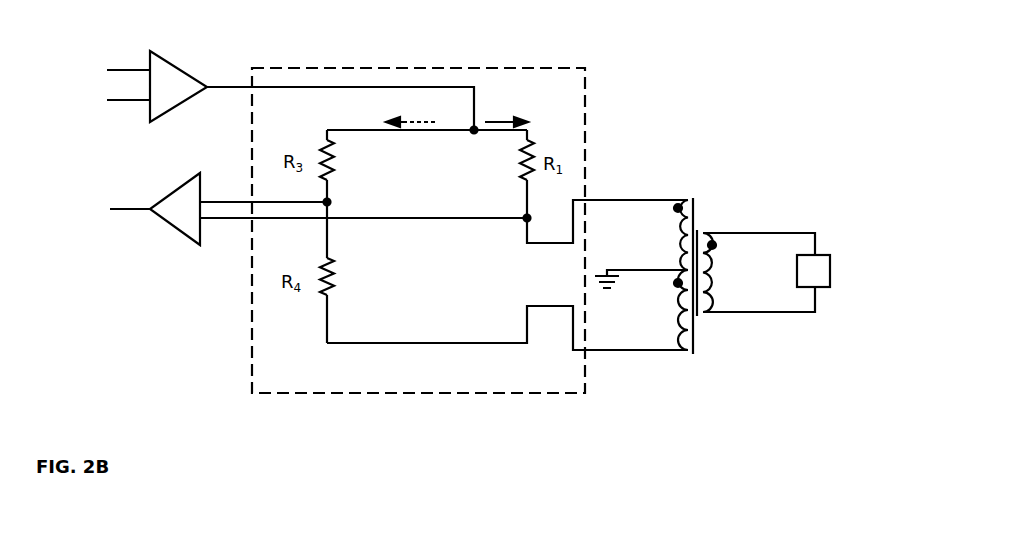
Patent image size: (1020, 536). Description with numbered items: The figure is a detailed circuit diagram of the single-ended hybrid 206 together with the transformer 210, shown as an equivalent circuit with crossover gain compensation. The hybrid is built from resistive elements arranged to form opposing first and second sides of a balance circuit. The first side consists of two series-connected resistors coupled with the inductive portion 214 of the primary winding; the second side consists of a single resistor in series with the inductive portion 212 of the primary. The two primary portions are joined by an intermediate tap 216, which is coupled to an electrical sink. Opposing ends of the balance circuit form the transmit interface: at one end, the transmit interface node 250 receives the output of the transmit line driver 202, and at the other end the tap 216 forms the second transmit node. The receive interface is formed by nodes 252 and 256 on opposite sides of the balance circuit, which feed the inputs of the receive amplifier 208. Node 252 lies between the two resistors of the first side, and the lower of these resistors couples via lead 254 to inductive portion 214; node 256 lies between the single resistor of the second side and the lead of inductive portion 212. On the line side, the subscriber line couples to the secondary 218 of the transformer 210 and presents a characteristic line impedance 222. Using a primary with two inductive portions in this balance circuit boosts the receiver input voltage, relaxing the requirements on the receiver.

The transmit line driver 202 is at (167, 58).
The receive amplifier 208 is at (181, 186).
The single-ended hybrid 206 is at (584, 70).
The transmit interface node 250 is at (476, 129).
The node 252 is at (329, 200).
The lead 254 is at (335, 342).
The node 256 is at (525, 216).
The transformer 210 is at (701, 267).
The inductive portion 212 is at (678, 204).
The inductive portion 214 is at (680, 346).
The intermediate tap 216 is at (607, 268).
The secondary 218 is at (706, 312).
The characteristic line impedance 222 is at (816, 254).